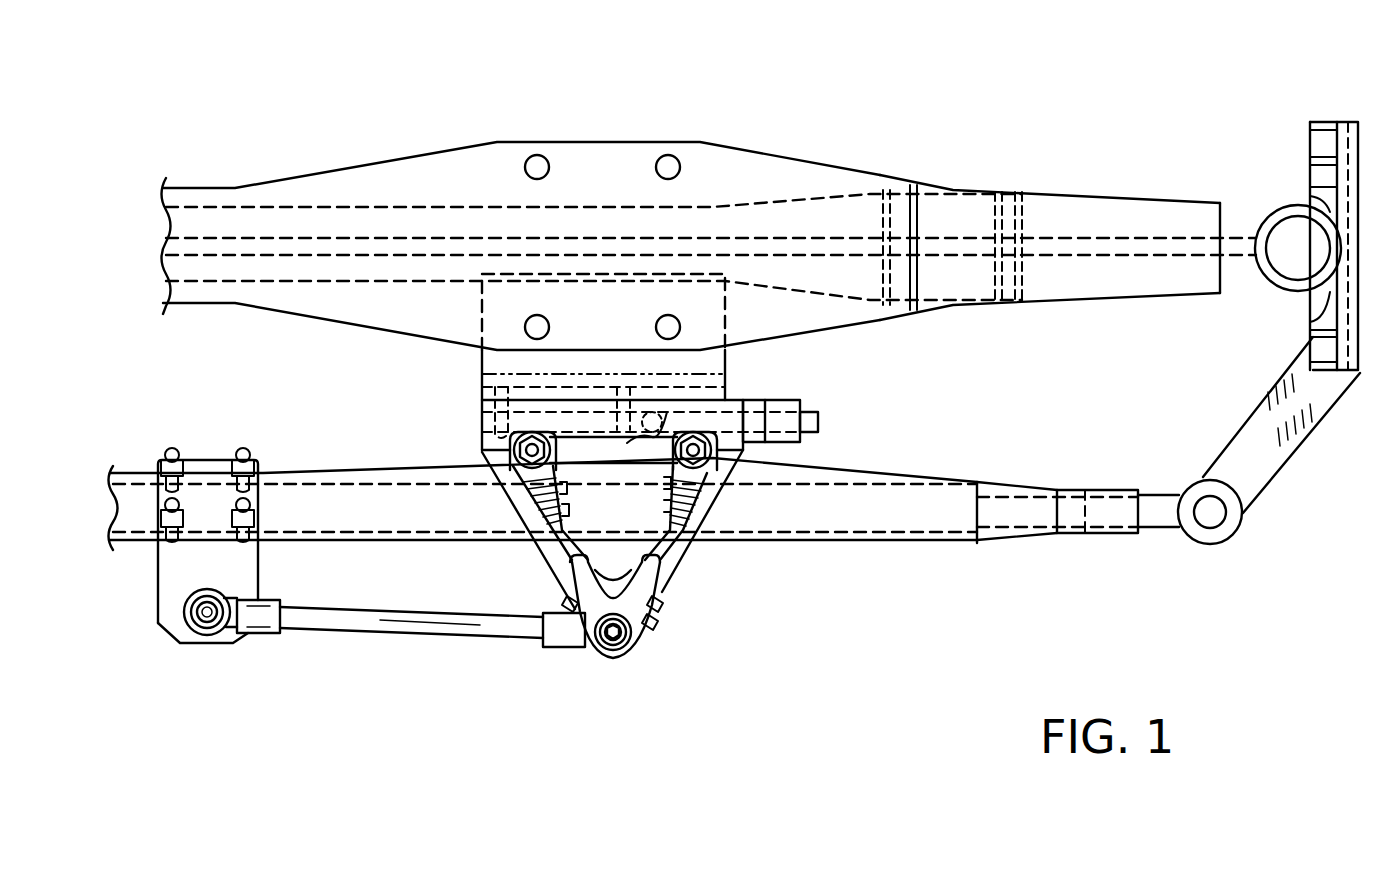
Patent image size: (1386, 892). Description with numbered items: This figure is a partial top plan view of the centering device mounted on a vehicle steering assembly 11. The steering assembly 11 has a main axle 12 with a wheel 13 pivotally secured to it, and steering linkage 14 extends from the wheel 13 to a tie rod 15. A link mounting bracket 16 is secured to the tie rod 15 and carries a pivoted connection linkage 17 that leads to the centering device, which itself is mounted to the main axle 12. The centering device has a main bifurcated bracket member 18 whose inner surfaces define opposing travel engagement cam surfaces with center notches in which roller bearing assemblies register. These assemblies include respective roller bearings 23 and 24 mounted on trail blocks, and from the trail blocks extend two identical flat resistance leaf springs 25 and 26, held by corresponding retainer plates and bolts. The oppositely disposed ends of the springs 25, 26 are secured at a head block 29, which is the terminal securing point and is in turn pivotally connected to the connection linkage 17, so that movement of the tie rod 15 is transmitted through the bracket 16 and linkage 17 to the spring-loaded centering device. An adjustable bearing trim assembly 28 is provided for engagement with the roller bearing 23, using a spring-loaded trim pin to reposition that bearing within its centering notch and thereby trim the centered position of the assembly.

The vehicle steering assembly 11 is at (1073, 188).
The main axle 12 is at (738, 160).
The wheel 13 is at (1358, 247).
The steering linkage 14 is at (1268, 467).
The tie rod 15 is at (1073, 520).
The link mounting bracket 16 is at (240, 558).
The pivoted connection linkage 17 is at (417, 628).
The main bifurcated bracket member 18 is at (713, 527).
The roller bearing 23 is at (510, 455).
The roller bearing 24 is at (718, 456).
The flat resistance leaf spring 25 is at (673, 553).
The flat resistance leaf spring 26 is at (553, 563).
The adjustable bearing trim assembly 28 is at (780, 410).
The head block 29 is at (640, 602).